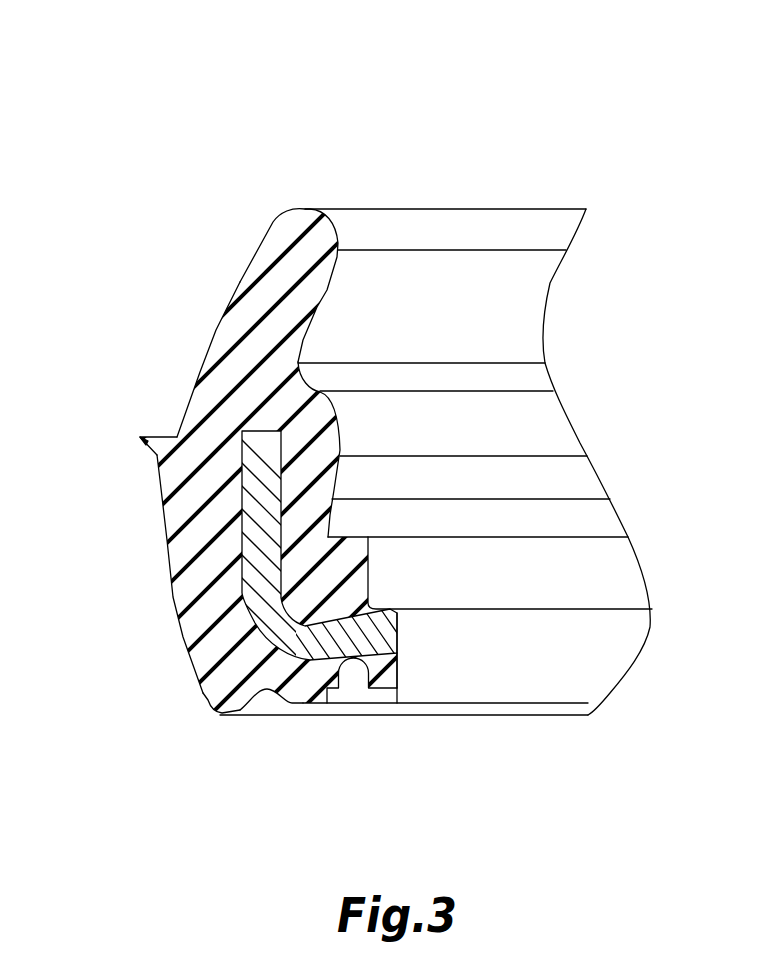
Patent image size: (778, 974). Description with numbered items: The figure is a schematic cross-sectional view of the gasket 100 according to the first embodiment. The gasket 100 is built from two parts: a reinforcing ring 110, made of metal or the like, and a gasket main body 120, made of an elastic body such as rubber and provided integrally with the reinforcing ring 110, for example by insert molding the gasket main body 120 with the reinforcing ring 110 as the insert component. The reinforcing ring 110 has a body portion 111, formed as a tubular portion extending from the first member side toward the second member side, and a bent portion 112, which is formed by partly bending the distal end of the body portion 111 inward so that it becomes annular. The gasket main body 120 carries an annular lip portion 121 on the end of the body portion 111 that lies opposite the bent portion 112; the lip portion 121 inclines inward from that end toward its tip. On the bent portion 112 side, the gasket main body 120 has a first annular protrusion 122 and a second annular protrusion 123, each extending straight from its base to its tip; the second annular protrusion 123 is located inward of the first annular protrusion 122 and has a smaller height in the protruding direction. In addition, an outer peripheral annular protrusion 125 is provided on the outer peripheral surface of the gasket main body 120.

The gasket 100 is at (527, 127).
The reinforcing ring 110 is at (303, 515).
The body portion 111 is at (267, 490).
The bent portion 112 is at (400, 637).
The gasket main body 120 is at (173, 357).
The lip portion 121 is at (297, 262).
The first annular protrusion 122 is at (230, 700).
The second annular protrusion 123 is at (298, 697).
The outer peripheral annular protrusion 125 is at (152, 452).